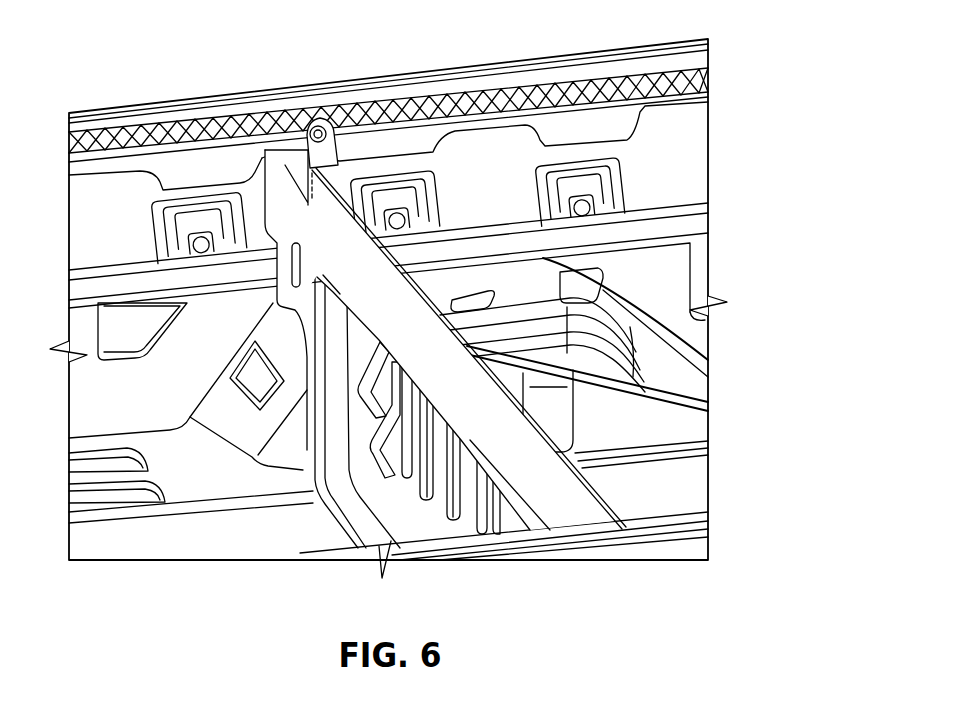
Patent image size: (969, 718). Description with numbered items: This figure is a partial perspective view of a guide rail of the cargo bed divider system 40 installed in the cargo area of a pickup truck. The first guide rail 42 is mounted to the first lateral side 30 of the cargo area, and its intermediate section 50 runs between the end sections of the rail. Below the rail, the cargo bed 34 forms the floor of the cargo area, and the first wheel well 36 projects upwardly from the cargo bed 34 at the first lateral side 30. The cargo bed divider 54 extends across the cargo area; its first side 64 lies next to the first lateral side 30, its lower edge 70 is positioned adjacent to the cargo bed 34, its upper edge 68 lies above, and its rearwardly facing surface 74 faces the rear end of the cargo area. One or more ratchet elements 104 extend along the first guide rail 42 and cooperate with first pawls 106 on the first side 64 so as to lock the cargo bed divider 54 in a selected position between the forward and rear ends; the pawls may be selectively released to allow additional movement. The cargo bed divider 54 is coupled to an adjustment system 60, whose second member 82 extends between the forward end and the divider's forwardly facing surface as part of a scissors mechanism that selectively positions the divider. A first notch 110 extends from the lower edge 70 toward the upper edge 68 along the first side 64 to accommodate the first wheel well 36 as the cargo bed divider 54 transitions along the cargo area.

The first lateral side 30 is at (96, 229).
The cargo bed 34 is at (197, 538).
The first wheel well 36 is at (622, 405).
The cargo bed divider system 40 is at (233, 403).
The first guide rail 42 is at (652, 106).
The intermediate section 50 is at (640, 67).
The cargo bed divider 54 is at (410, 337).
The adjustment system 60 is at (688, 388).
The first side 64 is at (256, 173).
The upper edge 68 is at (443, 307).
The lower edge 70 is at (323, 507).
The rearwardly facing surface 74 is at (450, 400).
The second member 82 is at (617, 381).
The ratchet elements 104 is at (442, 100).
The first pawls 106 is at (308, 123).
The first notch 110 is at (272, 357).